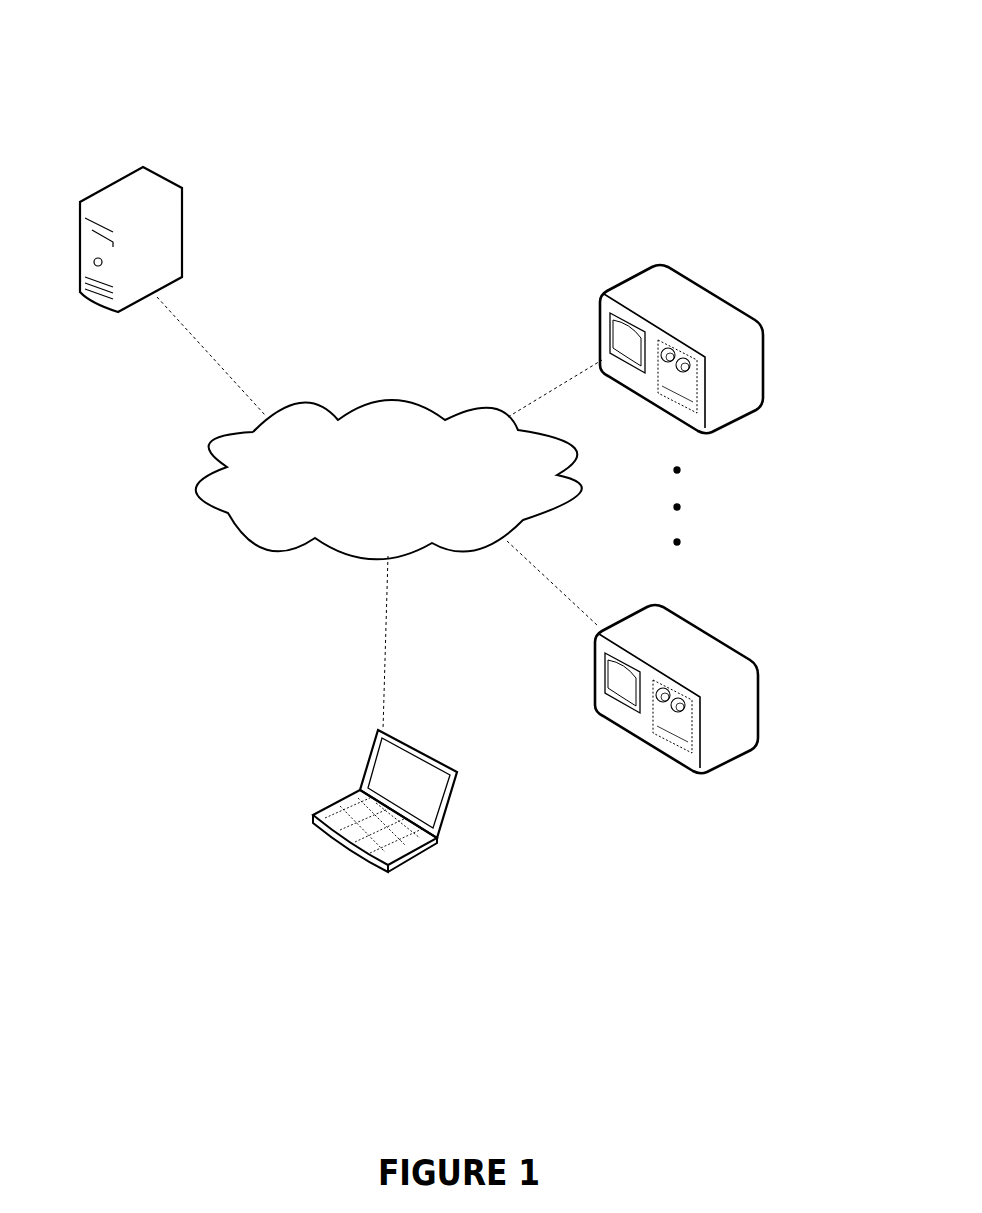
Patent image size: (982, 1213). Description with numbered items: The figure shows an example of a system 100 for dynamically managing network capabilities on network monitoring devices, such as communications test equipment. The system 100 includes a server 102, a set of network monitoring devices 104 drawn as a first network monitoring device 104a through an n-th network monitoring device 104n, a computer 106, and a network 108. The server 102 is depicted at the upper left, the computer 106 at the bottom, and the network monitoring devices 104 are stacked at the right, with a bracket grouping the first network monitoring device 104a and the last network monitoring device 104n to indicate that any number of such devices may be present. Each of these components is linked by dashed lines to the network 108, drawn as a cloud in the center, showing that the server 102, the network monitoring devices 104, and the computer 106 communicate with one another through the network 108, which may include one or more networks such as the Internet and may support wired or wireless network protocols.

The system 100 is at (553, 86).
The server 102 is at (170, 180).
The network monitoring devices 104 is at (778, 265).
The network monitoring device 104a is at (657, 267).
The network monitoring device 104n is at (693, 623).
The computer 106 is at (457, 772).
The network 108 is at (389, 479).